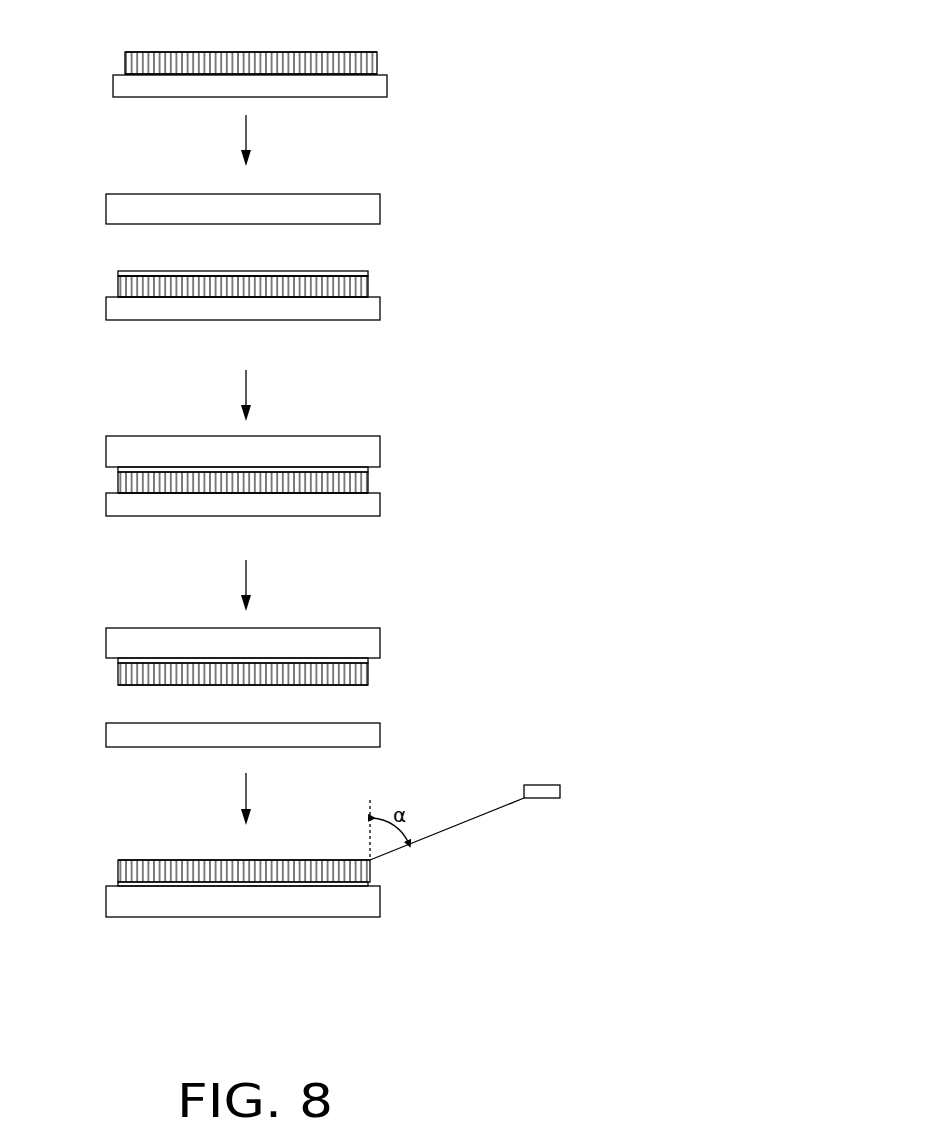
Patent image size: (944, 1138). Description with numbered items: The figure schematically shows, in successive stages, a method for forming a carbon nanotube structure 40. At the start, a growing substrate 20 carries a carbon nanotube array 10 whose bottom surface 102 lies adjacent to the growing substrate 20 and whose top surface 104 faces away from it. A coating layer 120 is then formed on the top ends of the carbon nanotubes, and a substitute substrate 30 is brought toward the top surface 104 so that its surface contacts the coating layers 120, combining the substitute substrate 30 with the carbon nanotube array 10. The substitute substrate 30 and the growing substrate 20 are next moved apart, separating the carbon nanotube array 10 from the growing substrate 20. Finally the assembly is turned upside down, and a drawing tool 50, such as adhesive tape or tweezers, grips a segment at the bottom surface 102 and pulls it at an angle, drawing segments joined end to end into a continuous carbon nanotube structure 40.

The carbon nanotube array 10 is at (370, 63).
The growing substrate 20 is at (372, 90).
The substitute substrate 30 is at (358, 210).
The carbon nanotube structure 40 is at (500, 811).
The drawing tool 50 is at (555, 785).
The bottom surface 102 is at (150, 75).
The top surface 104 is at (143, 52).
The coating layer 120 is at (147, 271).